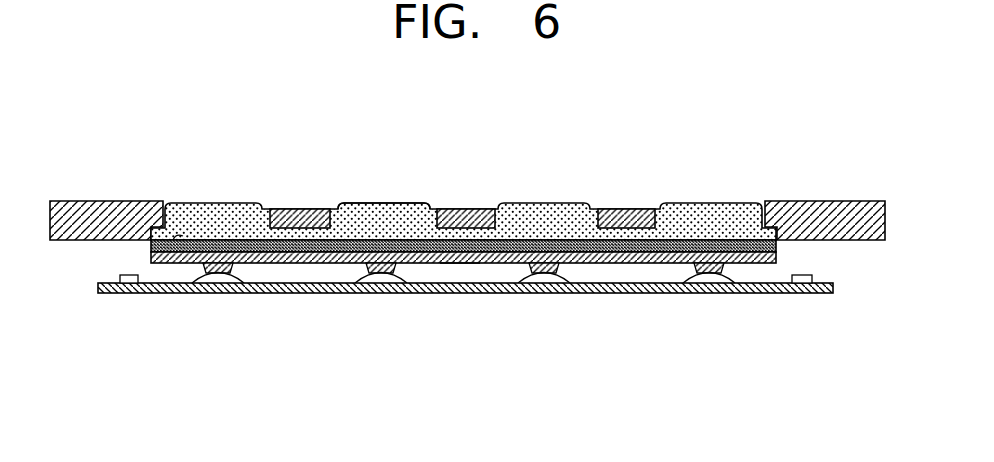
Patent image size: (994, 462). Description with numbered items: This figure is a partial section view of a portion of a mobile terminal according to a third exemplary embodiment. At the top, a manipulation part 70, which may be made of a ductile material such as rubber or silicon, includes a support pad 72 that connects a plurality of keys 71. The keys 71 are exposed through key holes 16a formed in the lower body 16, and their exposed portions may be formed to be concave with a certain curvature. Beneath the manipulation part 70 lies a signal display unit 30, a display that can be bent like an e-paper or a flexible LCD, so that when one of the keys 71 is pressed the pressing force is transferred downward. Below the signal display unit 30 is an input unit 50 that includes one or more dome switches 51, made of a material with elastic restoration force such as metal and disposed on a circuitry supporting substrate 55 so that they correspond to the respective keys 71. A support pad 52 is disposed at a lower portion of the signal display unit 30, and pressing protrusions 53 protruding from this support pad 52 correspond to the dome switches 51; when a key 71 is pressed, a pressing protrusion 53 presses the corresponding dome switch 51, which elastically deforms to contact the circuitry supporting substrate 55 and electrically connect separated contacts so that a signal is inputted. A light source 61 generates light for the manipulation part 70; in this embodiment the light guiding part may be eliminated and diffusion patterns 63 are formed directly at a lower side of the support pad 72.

The manipulation part 70 is at (290, 142).
The keys 71 is at (224, 207).
The support pad 72 is at (280, 228).
The lower body 16 is at (467, 209).
The key holes 16a is at (417, 207).
The signal display unit 30 is at (663, 250).
The input unit 50 is at (550, 343).
The dome switches 51 is at (538, 277).
The support pad 52 is at (459, 264).
The pressing protrusions 53 is at (377, 277).
The circuitry supporting substrate 55 is at (605, 294).
The light source 61 is at (127, 279).
The diffusion patterns 63 is at (182, 237).